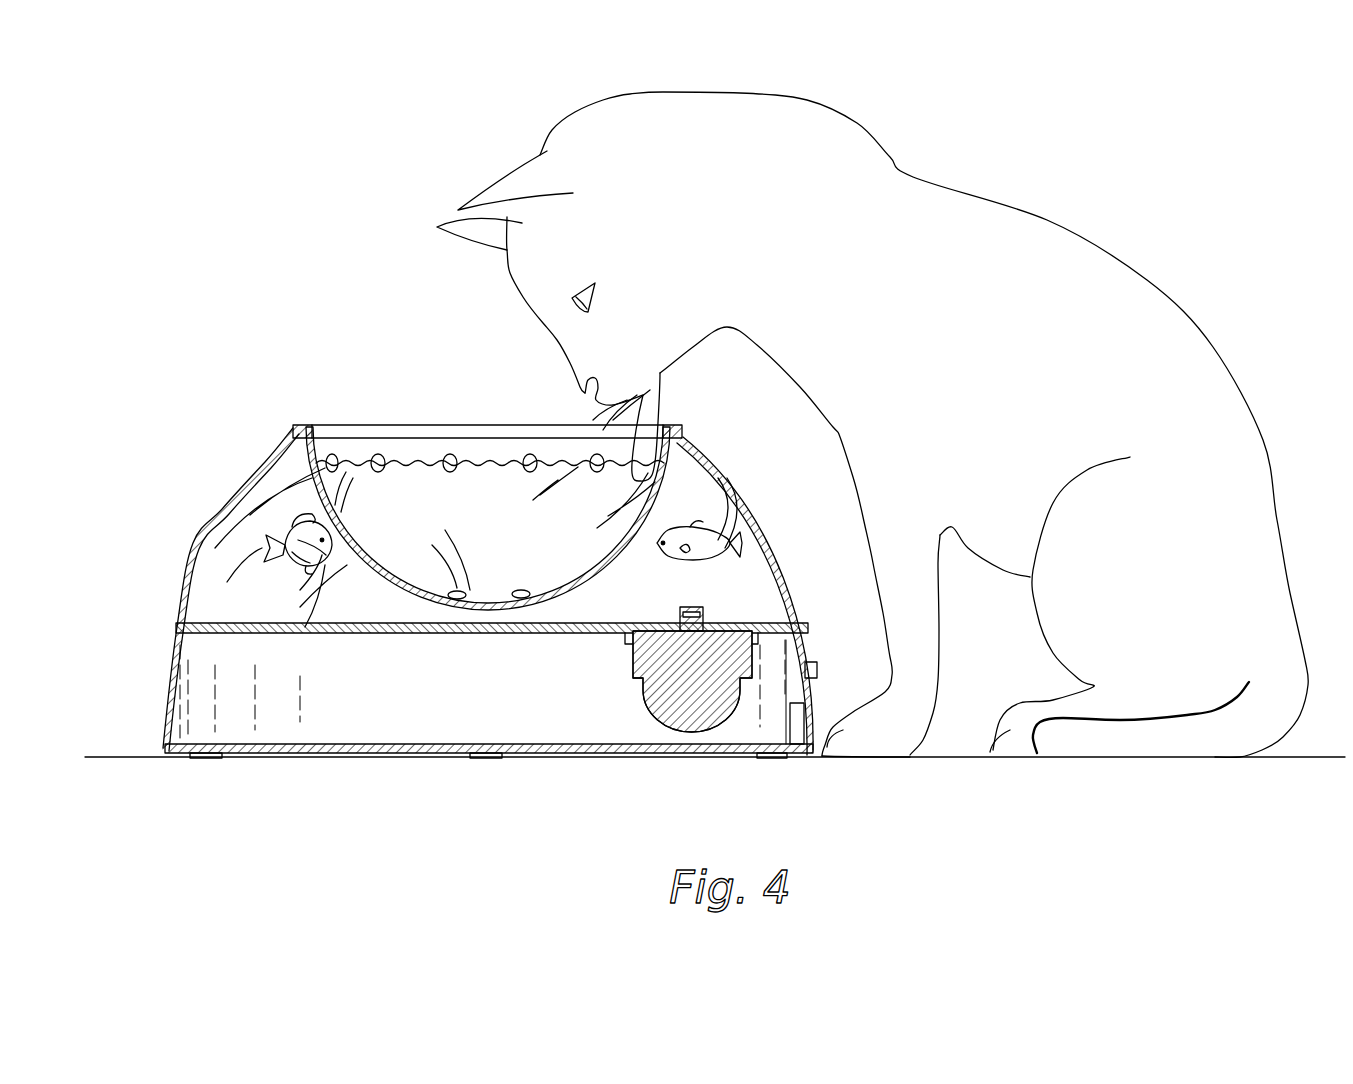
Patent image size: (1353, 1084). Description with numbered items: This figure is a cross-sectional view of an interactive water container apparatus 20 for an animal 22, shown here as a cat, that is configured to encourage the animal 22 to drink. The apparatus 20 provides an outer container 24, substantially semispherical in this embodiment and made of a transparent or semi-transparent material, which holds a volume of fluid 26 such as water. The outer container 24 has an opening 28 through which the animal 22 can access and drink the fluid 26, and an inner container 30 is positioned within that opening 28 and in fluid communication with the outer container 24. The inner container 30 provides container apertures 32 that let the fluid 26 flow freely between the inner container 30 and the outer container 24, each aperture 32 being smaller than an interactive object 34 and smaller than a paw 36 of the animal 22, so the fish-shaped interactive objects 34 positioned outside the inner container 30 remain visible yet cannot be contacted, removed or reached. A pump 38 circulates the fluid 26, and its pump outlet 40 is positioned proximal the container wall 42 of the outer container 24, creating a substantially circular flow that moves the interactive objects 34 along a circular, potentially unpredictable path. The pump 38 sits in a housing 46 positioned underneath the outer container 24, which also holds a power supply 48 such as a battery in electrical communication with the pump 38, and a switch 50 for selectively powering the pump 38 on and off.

The interactive water container apparatus 20 is at (353, 314).
The animal 22 is at (1065, 214).
The outer container 24 is at (238, 478).
The fluid 26 is at (412, 458).
The opening 28 is at (333, 412).
The inner container 30 is at (387, 587).
The container aperture 32 is at (524, 455).
The interactive object 34 is at (275, 550).
The paw 36 is at (874, 750).
The pump 38 is at (670, 735).
The pump outlet 40 is at (705, 607).
The container wall 42 is at (215, 527).
The housing 46 is at (165, 683).
The power supply 48 is at (797, 748).
The switch 50 is at (817, 665).